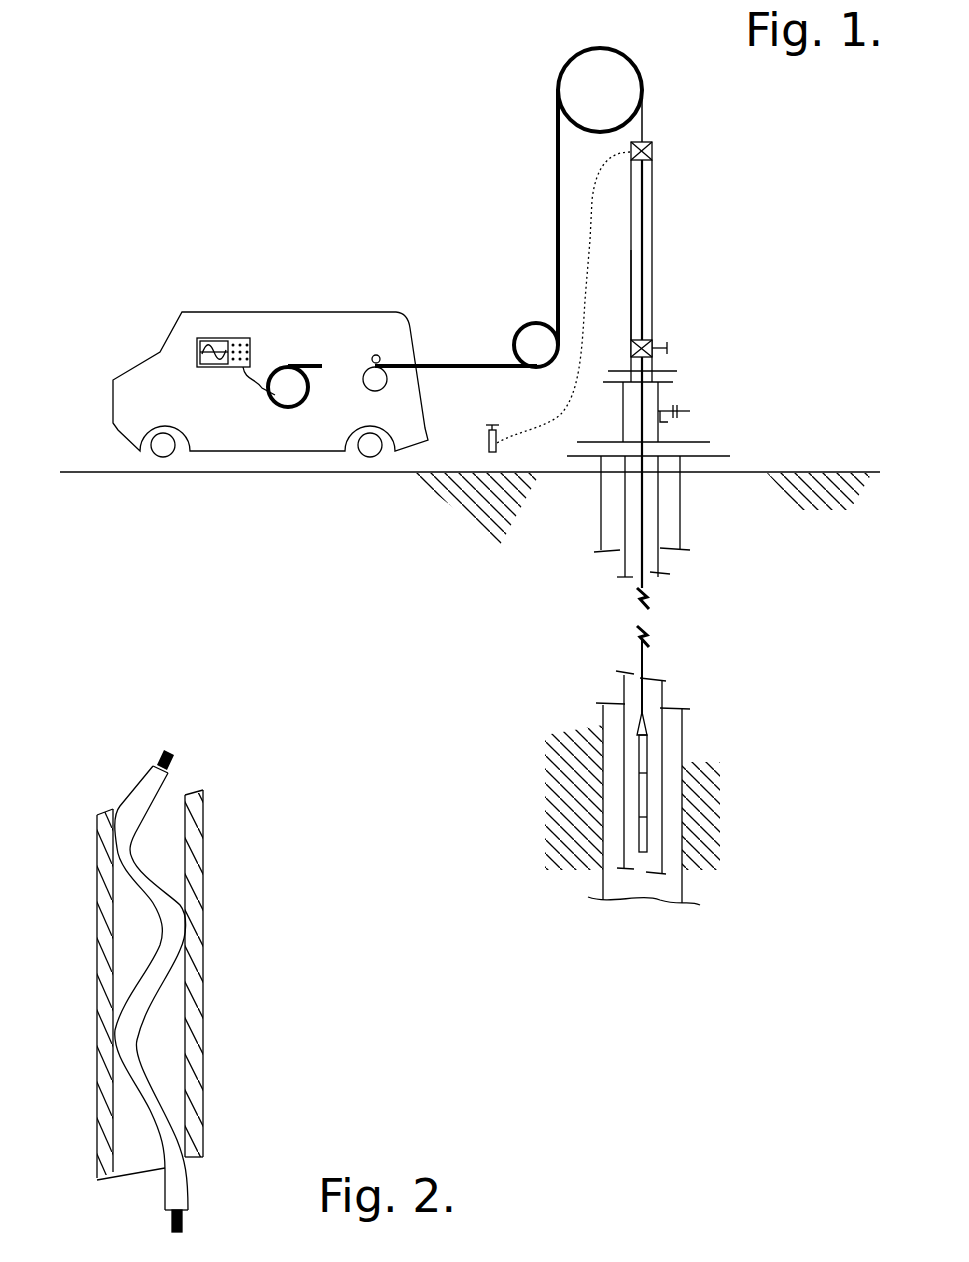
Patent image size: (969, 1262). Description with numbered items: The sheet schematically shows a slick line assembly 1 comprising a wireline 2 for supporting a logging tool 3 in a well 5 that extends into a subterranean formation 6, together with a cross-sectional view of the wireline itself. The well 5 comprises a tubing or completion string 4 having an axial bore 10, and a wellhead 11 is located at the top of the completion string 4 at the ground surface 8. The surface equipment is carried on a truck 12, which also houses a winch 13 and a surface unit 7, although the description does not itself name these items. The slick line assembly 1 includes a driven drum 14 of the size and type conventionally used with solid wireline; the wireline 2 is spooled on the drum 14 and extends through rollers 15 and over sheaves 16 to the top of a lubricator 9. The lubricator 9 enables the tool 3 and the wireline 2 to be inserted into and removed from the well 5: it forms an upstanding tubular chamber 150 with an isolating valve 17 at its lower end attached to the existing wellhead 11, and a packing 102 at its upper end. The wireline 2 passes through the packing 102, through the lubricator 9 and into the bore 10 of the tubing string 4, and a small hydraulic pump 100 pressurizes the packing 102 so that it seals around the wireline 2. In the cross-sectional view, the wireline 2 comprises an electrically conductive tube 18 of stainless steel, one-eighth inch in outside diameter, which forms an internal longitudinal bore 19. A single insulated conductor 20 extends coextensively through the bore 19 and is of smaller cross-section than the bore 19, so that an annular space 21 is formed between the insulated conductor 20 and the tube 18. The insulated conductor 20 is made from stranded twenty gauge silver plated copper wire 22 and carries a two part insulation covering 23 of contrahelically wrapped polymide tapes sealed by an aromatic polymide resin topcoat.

In FIG. 1, the slick line assembly 1 is at (236, 300).
In FIG. 1, the wireline 2 is at (558, 200).
In FIG. 2, the wireline 2 is at (203, 1003).
In FIG. 1, the logging tool 3 is at (647, 798).
In FIG. 1, the tubing or completion string 4 is at (658, 528).
In FIG. 1, the well 5 is at (665, 552).
In FIG. 1, the subterranean formation 6 is at (572, 747).
In FIG. 1, the surface control unit 7 is at (250, 352).
In FIG. 1, the ground surface 8 is at (818, 473).
In FIG. 1, the lubricator 9 is at (652, 222).
In FIG. 1, the axial bore 10 is at (650, 568).
In FIG. 1, the wellhead 11 is at (664, 408).
In FIG. 1, the truck 12 is at (368, 312).
In FIG. 1, the winch 13 is at (362, 352).
In FIG. 1, the driven drum 14 is at (288, 406).
In FIG. 1, the rollers 15 is at (387, 380).
In FIG. 1, the sheaves 16 is at (588, 67).
In FIG. 1, the isolating valve 17 is at (650, 340).
In FIG. 2, the electrically conductive tube 18 is at (203, 862).
In FIG. 2, the internal longitudinal bore 19 is at (170, 808).
In FIG. 2, the insulated conductor 20 is at (173, 925).
In FIG. 2, the annular space 21 is at (125, 930).
In FIG. 2, the silver plated copper wire 22 is at (183, 1222).
In FIG. 2, the insulation covering 23 is at (178, 1205).
In FIG. 1, the hydraulic pump 100 is at (497, 446).
In FIG. 1, the packing 102 is at (653, 152).
In FIG. 1, the tubular chamber 150 is at (646, 288).